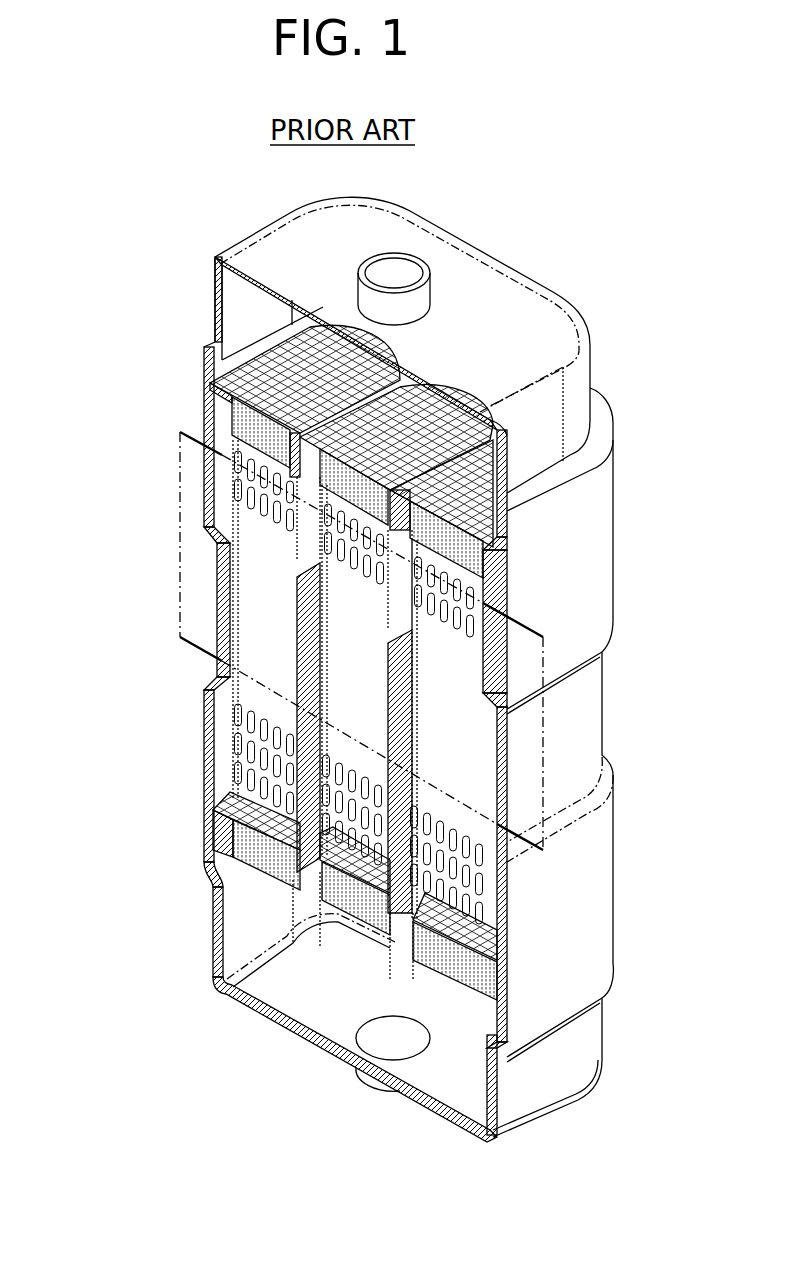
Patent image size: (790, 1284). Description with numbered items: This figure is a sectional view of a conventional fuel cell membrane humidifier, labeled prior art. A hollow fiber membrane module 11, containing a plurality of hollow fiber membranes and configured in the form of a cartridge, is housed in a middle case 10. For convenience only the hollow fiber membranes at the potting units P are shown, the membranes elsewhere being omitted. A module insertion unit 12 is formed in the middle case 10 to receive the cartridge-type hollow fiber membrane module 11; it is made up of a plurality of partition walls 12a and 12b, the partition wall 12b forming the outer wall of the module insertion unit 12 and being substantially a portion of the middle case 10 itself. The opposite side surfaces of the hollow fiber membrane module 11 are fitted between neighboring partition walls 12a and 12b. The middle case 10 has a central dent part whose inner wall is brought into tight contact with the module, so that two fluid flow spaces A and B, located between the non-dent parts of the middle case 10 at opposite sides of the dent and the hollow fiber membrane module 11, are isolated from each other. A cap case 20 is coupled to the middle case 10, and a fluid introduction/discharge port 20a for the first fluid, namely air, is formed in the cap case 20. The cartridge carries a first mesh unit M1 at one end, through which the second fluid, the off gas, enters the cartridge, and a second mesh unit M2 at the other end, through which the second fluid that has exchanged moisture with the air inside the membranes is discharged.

The middle case 10 is at (188, 725).
The cap case 20 is at (306, 257).
The fluid introduction/discharge port 20a is at (393, 272).
The potting unit P is at (282, 367).
The hollow fiber membrane module 11 is at (258, 577).
The module insertion unit 12 is at (100, 577).
The partition wall 12a is at (297, 676).
The partition wall 12b is at (222, 603).
The fluid flow space A is at (222, 472).
The first mesh unit M1 is at (247, 500).
The fluid flow space B is at (222, 762).
The second mesh unit M2 is at (247, 783).